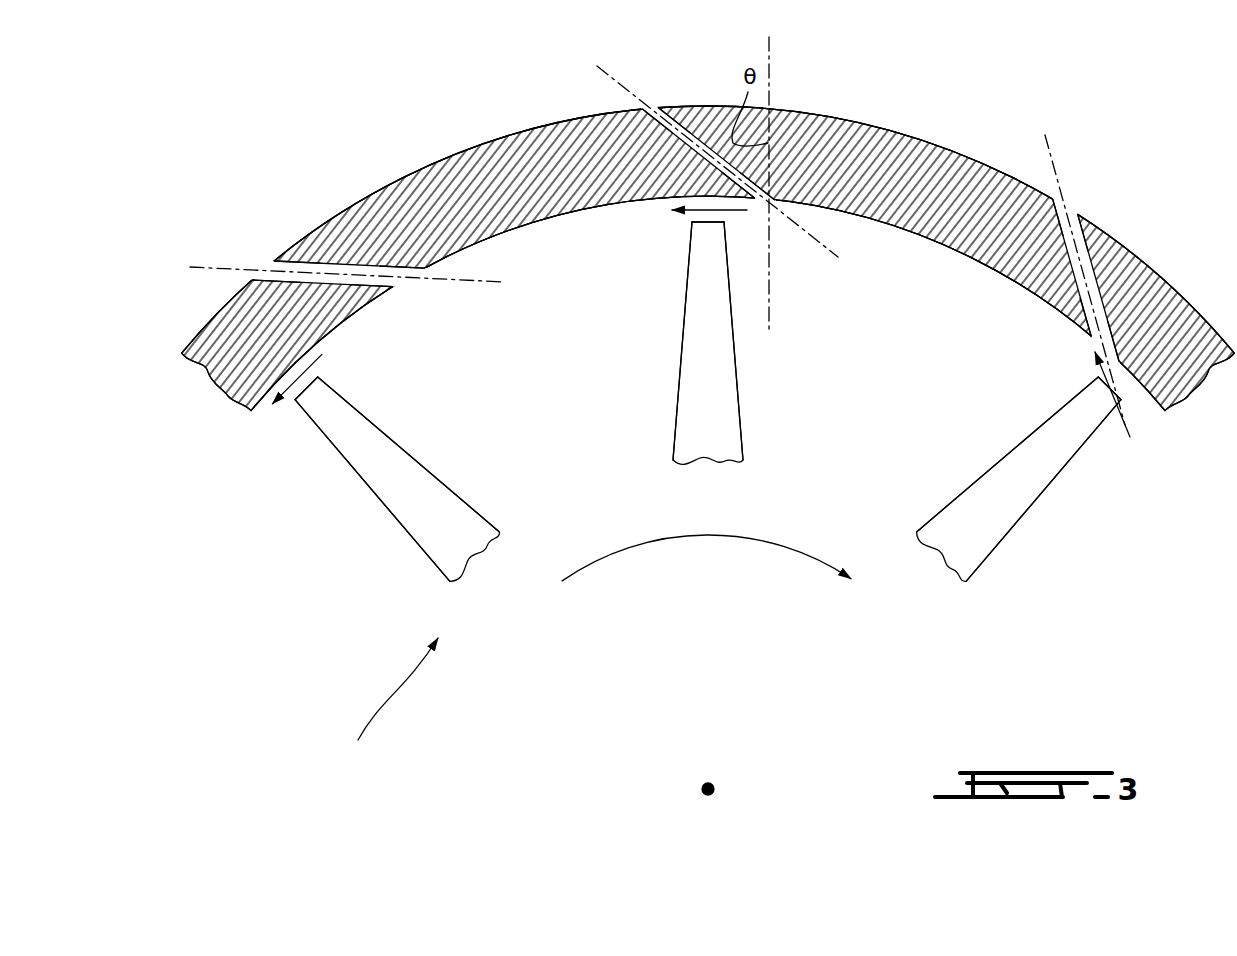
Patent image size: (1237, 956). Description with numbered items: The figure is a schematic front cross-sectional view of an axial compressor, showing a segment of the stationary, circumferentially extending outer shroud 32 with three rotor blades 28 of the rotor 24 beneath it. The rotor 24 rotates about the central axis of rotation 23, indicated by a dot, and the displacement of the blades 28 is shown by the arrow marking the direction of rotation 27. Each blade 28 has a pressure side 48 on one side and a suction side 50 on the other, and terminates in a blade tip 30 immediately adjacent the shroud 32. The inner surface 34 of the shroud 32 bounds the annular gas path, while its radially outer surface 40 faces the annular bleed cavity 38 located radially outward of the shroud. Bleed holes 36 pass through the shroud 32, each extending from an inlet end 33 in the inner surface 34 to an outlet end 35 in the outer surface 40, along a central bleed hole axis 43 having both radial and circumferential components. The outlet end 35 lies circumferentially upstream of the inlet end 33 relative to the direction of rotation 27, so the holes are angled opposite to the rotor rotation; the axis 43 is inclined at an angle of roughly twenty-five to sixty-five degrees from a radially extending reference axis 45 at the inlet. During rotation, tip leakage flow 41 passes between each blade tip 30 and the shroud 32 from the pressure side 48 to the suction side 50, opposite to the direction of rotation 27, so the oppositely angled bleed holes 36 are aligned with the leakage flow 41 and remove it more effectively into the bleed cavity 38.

The central axis of rotation 23 is at (715, 790).
The rotor 24 is at (387, 703).
The direction of rotation 27 is at (635, 547).
The blades 28 is at (412, 505).
The blade tips 30 is at (318, 377).
The outer shroud 32 is at (506, 170).
The inlet end 33 is at (410, 283).
The inner surface 34 is at (903, 230).
The outlet end 35 is at (272, 260).
The bleed holes 36 is at (330, 254).
The bleed cavity 38 is at (903, 102).
The radially outer surface 40 is at (415, 172).
The leakage flow 41 is at (300, 402).
The bleed hole axis 43 is at (210, 266).
The radially extending reference axis 45 is at (770, 62).
The pressure side 48 is at (410, 455).
The suction side 50 is at (357, 473).